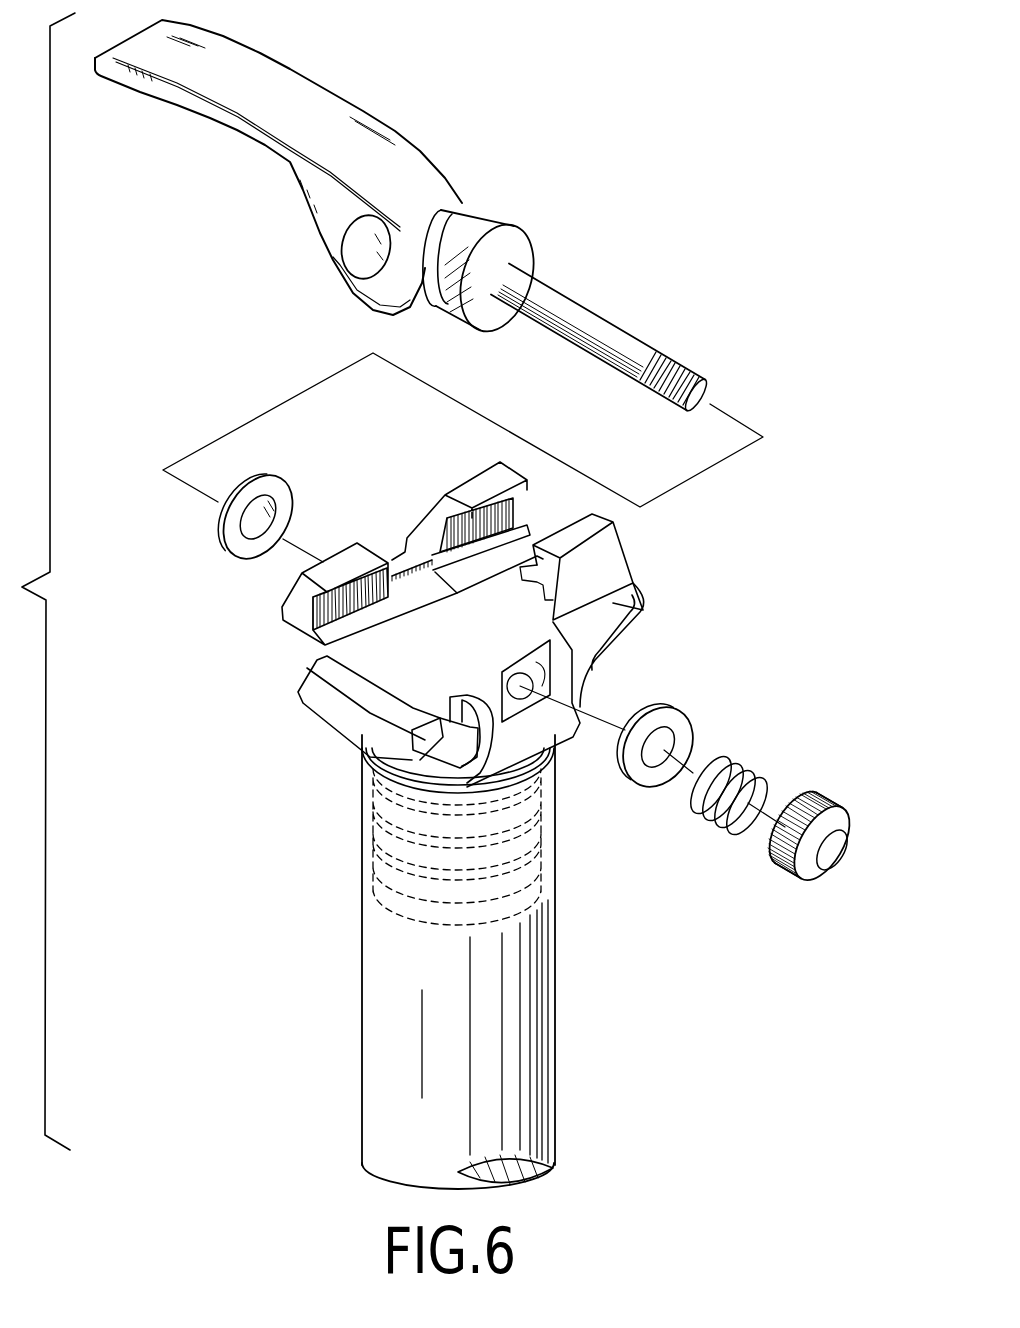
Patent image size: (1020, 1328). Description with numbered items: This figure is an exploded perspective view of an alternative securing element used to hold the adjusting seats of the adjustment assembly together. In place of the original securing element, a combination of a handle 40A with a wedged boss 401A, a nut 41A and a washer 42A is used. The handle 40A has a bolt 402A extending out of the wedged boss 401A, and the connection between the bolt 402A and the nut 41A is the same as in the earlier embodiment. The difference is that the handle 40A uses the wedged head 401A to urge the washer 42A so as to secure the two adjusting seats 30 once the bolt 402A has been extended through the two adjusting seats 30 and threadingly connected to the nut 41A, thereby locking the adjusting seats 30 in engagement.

The handle 40A is at (250, 164).
The wedged boss 401A is at (338, 257).
The bolt 402A is at (603, 327).
The washer 42A is at (240, 548).
The adjusting seat 30 is at (625, 555).
The nut 41A is at (786, 860).